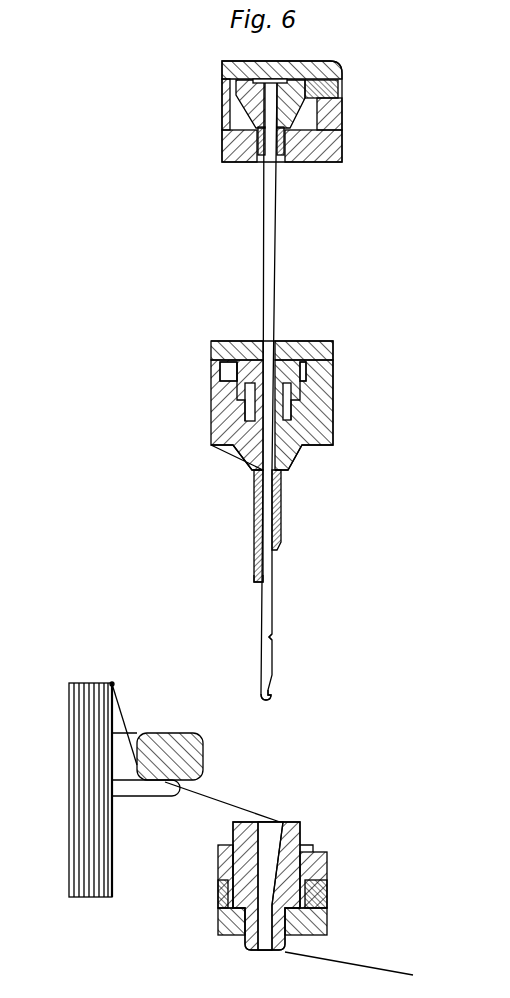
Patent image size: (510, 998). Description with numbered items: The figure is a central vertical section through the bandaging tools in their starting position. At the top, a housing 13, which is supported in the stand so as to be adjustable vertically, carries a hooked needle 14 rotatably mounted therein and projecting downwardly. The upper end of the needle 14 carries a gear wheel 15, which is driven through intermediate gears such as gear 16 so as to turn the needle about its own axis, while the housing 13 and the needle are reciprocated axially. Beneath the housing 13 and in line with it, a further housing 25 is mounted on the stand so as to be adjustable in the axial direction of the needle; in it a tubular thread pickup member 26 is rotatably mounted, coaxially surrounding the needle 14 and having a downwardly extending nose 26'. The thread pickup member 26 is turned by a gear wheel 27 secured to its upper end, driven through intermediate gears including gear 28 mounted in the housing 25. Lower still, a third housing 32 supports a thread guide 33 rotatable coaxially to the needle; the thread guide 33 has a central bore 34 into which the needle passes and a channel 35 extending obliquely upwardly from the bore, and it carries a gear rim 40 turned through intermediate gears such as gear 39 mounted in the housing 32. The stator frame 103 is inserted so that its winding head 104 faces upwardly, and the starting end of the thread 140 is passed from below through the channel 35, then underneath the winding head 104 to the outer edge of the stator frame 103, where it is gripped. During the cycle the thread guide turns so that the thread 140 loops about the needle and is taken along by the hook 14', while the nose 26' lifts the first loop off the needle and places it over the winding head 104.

The housing 13 is at (335, 158).
The hooked needle 14 is at (251, 389).
The hook 14' is at (291, 699).
The gear wheel 15 is at (245, 110).
The intermediate gear 16 is at (338, 90).
The housing 25 is at (322, 436).
The tubular thread pickup member 26 is at (240, 526).
The nose 26' is at (231, 583).
The gear wheel 27 is at (242, 370).
The intermediate gear 28 is at (328, 376).
The third housing 32 is at (222, 922).
The thread guide 33 is at (282, 826).
The central bore 34 is at (258, 838).
The channel 35 is at (300, 832).
The intermediate gear 39 is at (322, 897).
The gear rim 40 is at (228, 895).
The stator frame 103 is at (85, 738).
The winding head 104 is at (175, 745).
The thread 140 is at (347, 962).